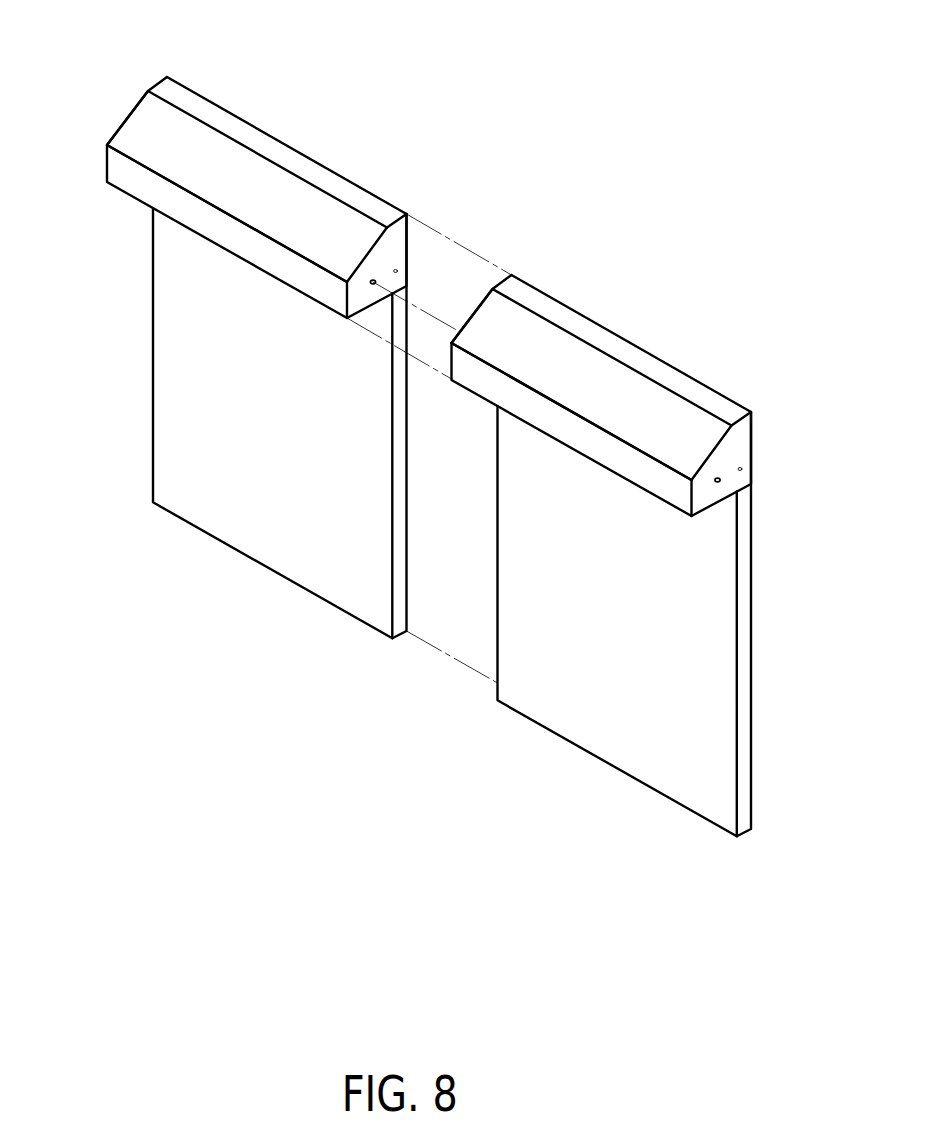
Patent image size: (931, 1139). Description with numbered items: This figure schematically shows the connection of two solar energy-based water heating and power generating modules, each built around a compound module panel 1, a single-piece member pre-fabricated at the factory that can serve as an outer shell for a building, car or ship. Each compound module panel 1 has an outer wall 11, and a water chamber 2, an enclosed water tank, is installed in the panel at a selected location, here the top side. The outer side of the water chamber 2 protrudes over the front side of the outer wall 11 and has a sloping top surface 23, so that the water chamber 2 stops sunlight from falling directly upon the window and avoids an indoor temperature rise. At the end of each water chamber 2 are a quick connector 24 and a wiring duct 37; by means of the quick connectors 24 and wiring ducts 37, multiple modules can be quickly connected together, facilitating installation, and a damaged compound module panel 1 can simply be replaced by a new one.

The compound module panel 1 is at (438, 522).
The outer wall 11 is at (438, 522).
The water chamber 2 is at (436, 260).
The sloping top surface 23 is at (419, 242).
The quick connector 24 is at (546, 269).
The wiring duct 37 is at (608, 289).